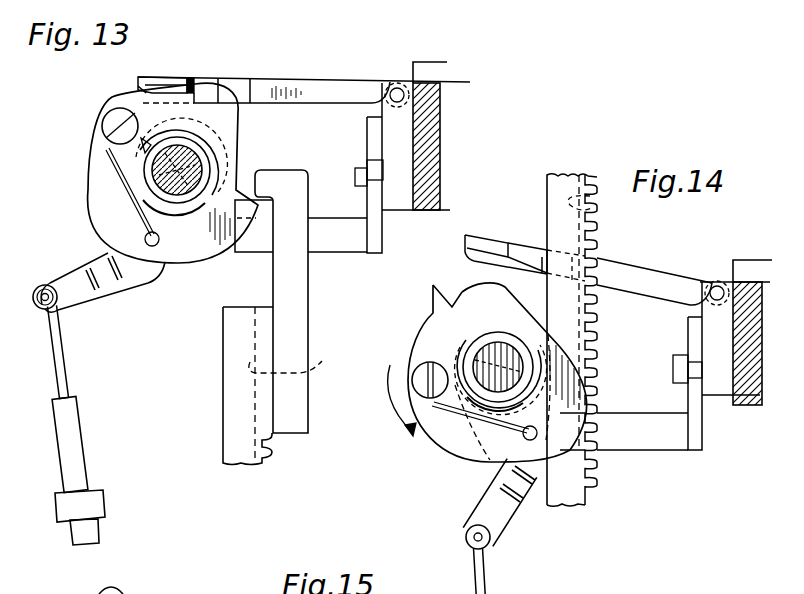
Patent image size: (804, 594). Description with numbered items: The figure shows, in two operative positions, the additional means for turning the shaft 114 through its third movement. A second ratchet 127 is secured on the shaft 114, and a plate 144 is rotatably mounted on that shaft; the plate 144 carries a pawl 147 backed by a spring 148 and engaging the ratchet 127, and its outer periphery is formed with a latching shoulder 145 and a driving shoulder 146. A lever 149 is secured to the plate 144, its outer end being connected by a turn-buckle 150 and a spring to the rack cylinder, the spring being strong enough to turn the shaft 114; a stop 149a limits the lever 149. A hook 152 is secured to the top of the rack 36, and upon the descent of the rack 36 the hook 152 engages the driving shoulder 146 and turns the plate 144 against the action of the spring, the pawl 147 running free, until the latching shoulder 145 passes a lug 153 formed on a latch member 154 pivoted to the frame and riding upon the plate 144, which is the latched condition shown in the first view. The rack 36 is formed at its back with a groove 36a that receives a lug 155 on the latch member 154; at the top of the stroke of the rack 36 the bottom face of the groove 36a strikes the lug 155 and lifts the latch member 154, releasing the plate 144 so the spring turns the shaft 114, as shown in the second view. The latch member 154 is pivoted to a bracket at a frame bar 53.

In FIG. 13, the rack 36 is at (233, 420).
In FIG. 14, the rack 36 is at (574, 483).
In FIG. 13, the groove 36a is at (300, 385).
In FIG. 14, the groove 36a is at (590, 196).
In FIG. 13, the bar 53 is at (432, 143).
In FIG. 14, the bar 53 is at (747, 400).
In FIG. 13, the shaft 114 is at (157, 172).
In FIG. 14, the shaft 114 is at (520, 370).
In FIG. 13, the second ratchet 127 is at (226, 205).
In FIG. 14, the second ratchet 127 is at (467, 345).
In FIG. 13, the plate 144 is at (100, 193).
In FIG. 14, the plate 144 is at (452, 433).
In FIG. 13, the latching shoulder 145 is at (190, 78).
In FIG. 14, the latching shoulder 145 is at (455, 303).
In FIG. 13, the driving shoulder 146 is at (237, 197).
In FIG. 14, the driving shoulder 146 is at (560, 328).
In FIG. 13, the pawl 147 is at (115, 147).
In FIG. 14, the pawl 147 is at (453, 400).
In FIG. 13, the spring 148 is at (140, 216).
In FIG. 14, the spring 148 is at (493, 441).
In FIG. 13, the lever 149 is at (137, 272).
In FIG. 14, the lever 149 is at (520, 497).
In FIG. 13, the stop 149a is at (330, 243).
In FIG. 14, the stop 149a is at (672, 440).
In FIG. 13, the turn-buckle 150 is at (73, 437).
In FIG. 14, the turn-buckle 150 is at (484, 586).
In FIG. 13, the hook 152 is at (288, 192).
In FIG. 13, the lug 153 is at (154, 86).
In FIG. 14, the lug 153 is at (485, 244).
In FIG. 13, the latch member 154 is at (305, 85).
In FIG. 14, the latch member 154 is at (632, 270).
In FIG. 13, the lug 155 is at (242, 83).
In FIG. 14, the lug 155 is at (548, 278).